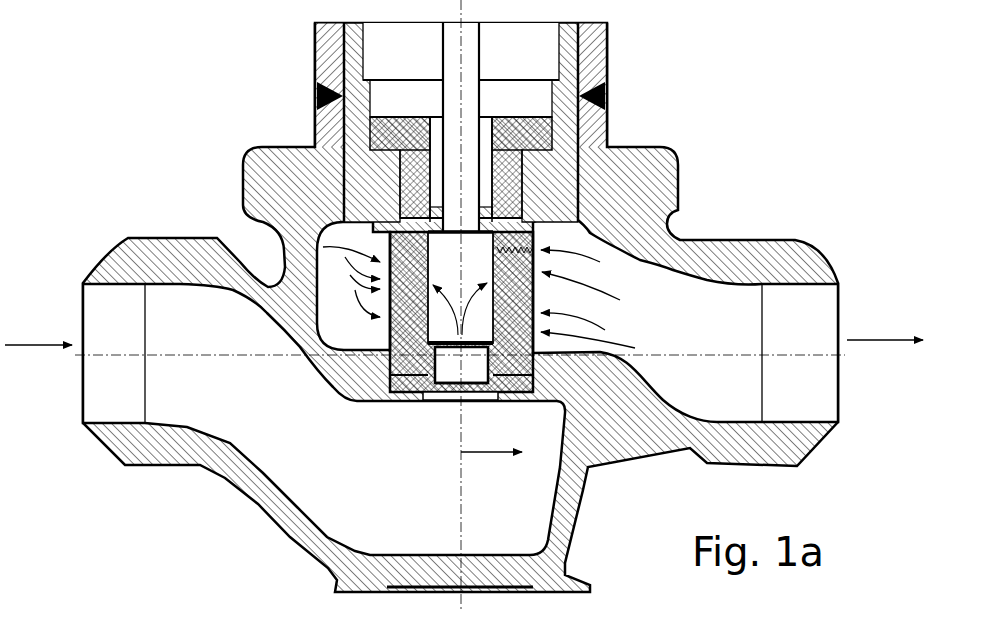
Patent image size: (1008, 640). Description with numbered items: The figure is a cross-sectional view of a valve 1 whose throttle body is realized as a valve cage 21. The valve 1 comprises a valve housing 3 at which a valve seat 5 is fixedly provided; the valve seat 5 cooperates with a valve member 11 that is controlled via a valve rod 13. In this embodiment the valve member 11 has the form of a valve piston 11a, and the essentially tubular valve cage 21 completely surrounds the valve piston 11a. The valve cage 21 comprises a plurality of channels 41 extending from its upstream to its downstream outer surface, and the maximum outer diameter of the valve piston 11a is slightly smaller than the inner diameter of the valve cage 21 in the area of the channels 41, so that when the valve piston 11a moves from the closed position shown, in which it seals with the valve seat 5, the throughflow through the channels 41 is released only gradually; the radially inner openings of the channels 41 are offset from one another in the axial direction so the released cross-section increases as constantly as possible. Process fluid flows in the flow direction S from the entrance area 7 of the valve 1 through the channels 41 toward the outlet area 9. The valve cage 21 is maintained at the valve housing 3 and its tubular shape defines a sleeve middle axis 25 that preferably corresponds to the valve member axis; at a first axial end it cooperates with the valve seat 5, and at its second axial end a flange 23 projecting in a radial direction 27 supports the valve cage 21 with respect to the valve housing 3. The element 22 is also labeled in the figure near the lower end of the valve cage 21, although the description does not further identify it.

The valve 1 is at (464, 320).
The valve housing 3 is at (710, 257).
The valve seat 5 is at (435, 499).
The entrance area 7 is at (270, 435).
The outlet area 9 is at (732, 340).
The valve member 11 is at (318, 133).
The valve piston 11a is at (448, 240).
The valve rod 13 is at (472, 62).
The valve cage 21 is at (545, 333).
The seat ring 22 is at (415, 378).
The flange 23 is at (607, 157).
The sleeve middle axis 25 is at (448, 345).
The radial direction 27 is at (487, 455).
The channels 41 is at (323, 247).
The flow direction S is at (30, 345).